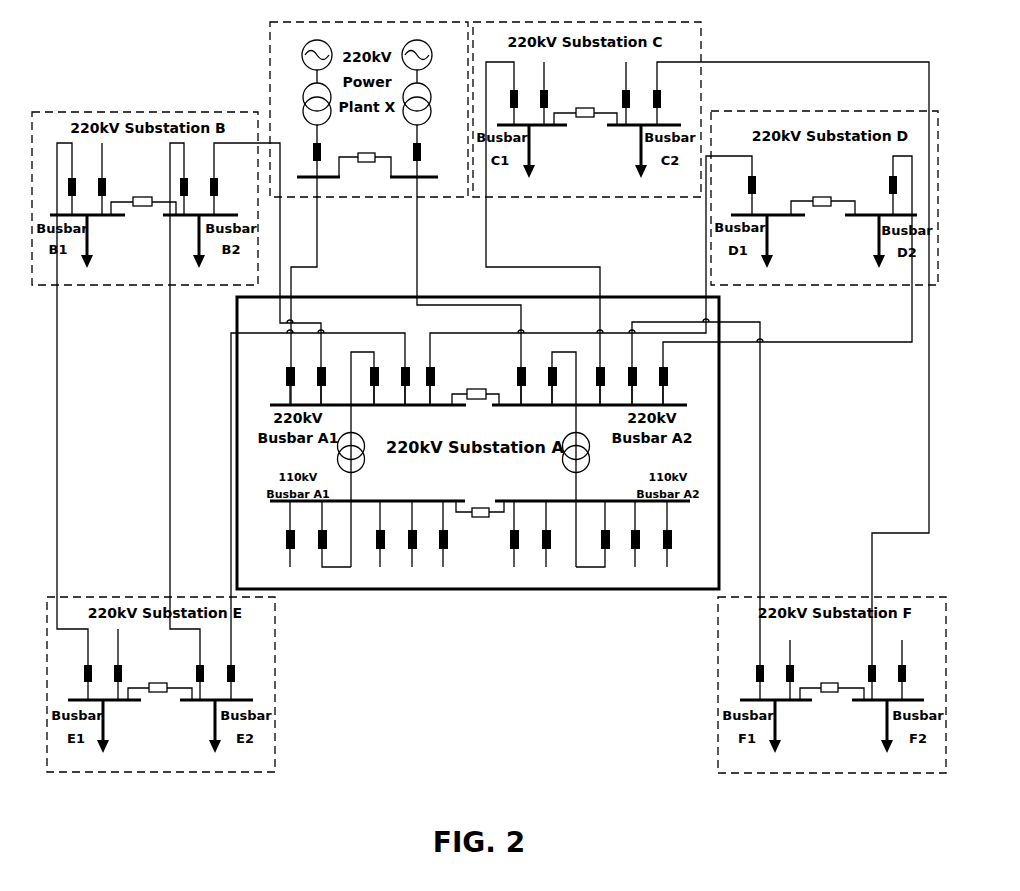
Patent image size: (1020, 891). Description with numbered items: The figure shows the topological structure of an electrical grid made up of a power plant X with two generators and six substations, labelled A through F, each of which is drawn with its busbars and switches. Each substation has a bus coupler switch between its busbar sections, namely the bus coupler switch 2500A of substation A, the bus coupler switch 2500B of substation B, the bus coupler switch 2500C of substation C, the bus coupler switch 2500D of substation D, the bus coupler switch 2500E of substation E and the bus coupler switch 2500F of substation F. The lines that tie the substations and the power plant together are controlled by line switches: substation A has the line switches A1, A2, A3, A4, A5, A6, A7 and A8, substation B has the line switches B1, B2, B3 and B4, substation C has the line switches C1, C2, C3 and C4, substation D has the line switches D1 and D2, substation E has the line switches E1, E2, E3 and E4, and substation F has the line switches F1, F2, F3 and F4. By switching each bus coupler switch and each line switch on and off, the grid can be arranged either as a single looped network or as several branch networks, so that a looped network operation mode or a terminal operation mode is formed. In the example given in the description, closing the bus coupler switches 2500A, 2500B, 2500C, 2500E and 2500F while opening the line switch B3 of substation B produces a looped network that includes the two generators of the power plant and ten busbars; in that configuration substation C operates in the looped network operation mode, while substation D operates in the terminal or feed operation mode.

The line switch A1 is at (289, 367).
The line switch A2 is at (320, 367).
The line switch A3 is at (404, 367).
The line switch A4 is at (430, 367).
The line switch A5 is at (520, 367).
The line switch A6 is at (599, 367).
The line switch A7 is at (631, 367).
The line switch A8 is at (662, 367).
The line switch B1 is at (72, 177).
The line switch B2 is at (102, 177).
The line switch B3 is at (184, 177).
The line switch B4 is at (214, 177).
The line switch C1 is at (514, 89).
The line switch C2 is at (544, 89).
The line switch C3 is at (626, 89).
The line switch C4 is at (657, 89).
The line switch D1 is at (752, 175).
The line switch D2 is at (893, 175).
The line switch E1 is at (88, 663).
The line switch E2 is at (118, 663).
The line switch E3 is at (200, 663).
The line switch E4 is at (230, 663).
The line switch F1 is at (760, 663).
The line switch F2 is at (790, 663).
The line switch F3 is at (872, 663).
The line switch F4 is at (902, 663).
The bus coupler switch 2500A is at (476, 388).
The bus coupler switch 2500B is at (143, 197).
The bus coupler switch 2500C is at (585, 108).
The bus coupler switch 2500D is at (823, 196).
The bus coupler switch 2500E is at (160, 683).
The bus coupler switch 2500F is at (832, 683).